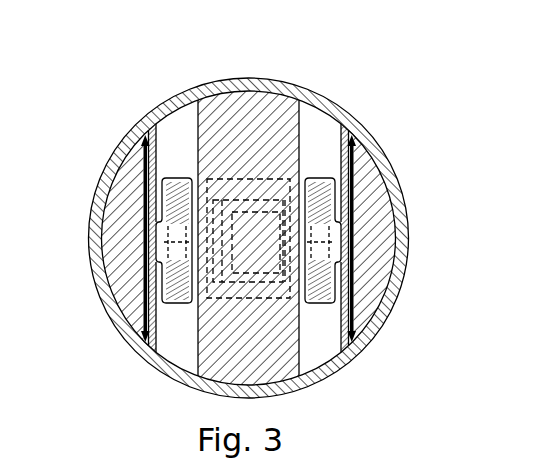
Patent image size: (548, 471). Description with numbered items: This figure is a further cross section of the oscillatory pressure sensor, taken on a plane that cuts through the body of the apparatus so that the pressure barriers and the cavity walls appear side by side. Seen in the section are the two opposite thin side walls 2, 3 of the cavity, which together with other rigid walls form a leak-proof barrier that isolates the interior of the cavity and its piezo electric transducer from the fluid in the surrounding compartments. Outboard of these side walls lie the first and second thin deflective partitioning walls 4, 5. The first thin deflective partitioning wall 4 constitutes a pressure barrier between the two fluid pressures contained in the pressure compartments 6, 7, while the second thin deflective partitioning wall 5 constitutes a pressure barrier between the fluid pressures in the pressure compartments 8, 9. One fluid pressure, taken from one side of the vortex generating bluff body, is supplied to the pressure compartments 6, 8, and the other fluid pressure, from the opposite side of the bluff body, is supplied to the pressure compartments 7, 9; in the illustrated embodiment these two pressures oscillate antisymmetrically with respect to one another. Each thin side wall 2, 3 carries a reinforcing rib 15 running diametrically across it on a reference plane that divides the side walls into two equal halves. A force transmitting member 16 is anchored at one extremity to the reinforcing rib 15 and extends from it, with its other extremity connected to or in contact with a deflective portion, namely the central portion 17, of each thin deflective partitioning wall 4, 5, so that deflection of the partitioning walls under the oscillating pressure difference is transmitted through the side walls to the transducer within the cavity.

The thin side wall 2 is at (180, 173).
The thin side wall 3 is at (317, 173).
The first thin deflective partitioning wall 4 is at (160, 166).
The second thin deflective partitioning wall 5 is at (337, 166).
The pressure compartment 6 is at (143, 187).
The pressure compartment 7 is at (172, 338).
The pressure compartment 8 is at (354, 185).
The pressure compartment 9 is at (318, 332).
The reinforcing rib 15 is at (143, 274).
The force transmitting member 16 is at (150, 277).
The central portion 17 is at (143, 240).